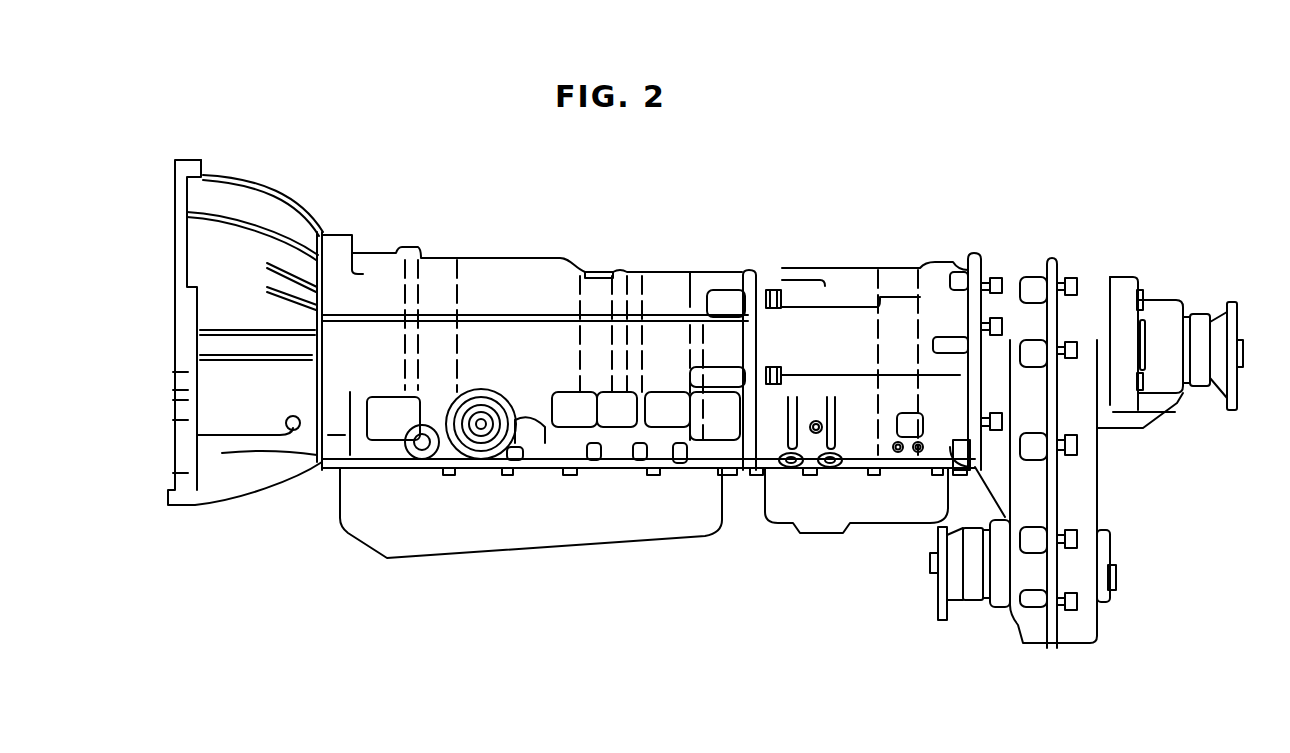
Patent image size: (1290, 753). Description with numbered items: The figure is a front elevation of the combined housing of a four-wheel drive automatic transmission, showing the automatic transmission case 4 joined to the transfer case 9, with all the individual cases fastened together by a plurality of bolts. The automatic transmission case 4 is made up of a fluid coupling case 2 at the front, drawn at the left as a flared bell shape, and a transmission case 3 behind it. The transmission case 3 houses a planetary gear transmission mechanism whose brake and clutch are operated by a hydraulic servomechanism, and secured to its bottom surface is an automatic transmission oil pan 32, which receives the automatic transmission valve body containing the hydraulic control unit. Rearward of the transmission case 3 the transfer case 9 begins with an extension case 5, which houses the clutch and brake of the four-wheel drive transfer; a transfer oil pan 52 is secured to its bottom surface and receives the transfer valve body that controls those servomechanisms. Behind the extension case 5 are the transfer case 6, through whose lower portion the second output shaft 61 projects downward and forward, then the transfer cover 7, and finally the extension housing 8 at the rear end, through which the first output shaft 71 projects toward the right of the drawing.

The fluid coupling case 2 is at (237, 195).
The transmission case 3 is at (497, 272).
The automatic transmission case 4 is at (397, 184).
The extension case 5 is at (858, 290).
The transfer case 6 is at (1012, 272).
The transfer cover 7 is at (1088, 283).
The extension housing 8 is at (1160, 312).
The transfer case 9 is at (973, 204).
The automatic transmission oil pan 32 is at (587, 530).
The transfer oil pan 52 is at (833, 508).
The second output shaft 61 is at (953, 576).
The first output shaft 71 is at (1230, 320).